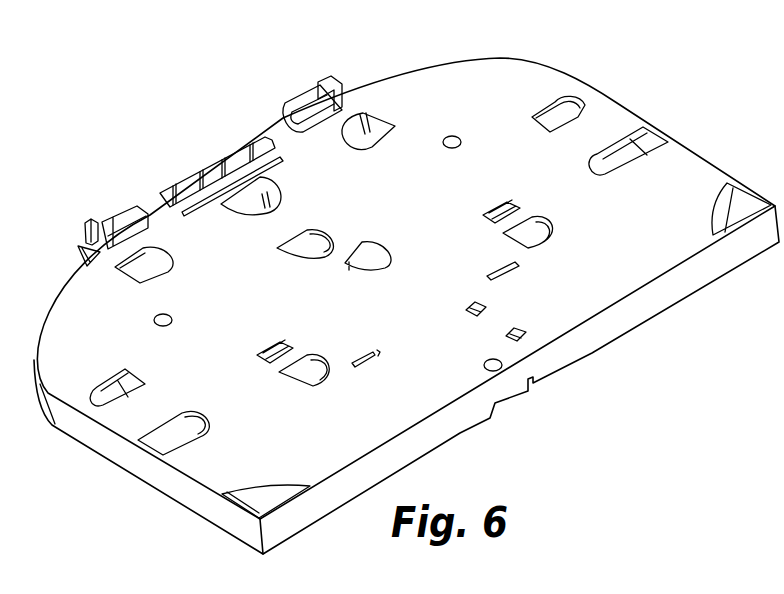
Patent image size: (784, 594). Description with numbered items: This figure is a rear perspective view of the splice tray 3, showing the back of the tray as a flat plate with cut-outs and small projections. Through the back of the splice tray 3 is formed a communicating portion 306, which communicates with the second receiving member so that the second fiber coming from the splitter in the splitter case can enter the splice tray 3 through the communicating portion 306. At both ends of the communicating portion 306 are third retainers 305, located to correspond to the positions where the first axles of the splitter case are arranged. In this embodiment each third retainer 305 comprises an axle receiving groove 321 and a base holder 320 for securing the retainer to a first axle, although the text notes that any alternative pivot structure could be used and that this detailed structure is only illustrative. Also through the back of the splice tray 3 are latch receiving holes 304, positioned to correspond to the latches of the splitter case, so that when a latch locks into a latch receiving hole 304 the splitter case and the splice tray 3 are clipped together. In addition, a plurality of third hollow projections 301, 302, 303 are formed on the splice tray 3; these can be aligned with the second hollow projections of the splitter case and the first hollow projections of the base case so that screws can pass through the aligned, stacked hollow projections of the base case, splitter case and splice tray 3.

The splice tray 3 is at (602, 65).
The third hollow projection 301 is at (164, 318).
The third hollow projection 302 is at (451, 145).
The third hollow projection 303 is at (498, 367).
The latch receiving hole 304 is at (273, 346).
The third retainer 305 is at (302, 97).
The communicating portion 306 is at (268, 161).
The base holder 320 is at (323, 78).
The axle receiving groove 321 is at (293, 107).